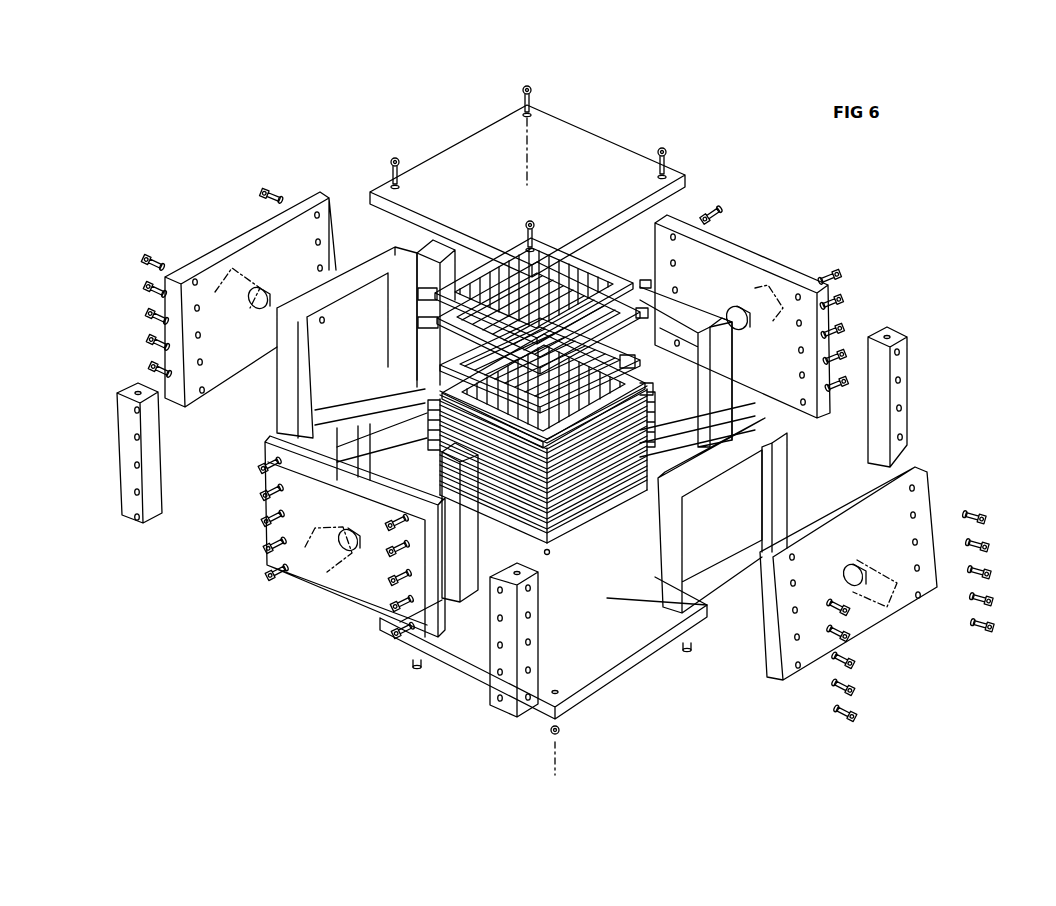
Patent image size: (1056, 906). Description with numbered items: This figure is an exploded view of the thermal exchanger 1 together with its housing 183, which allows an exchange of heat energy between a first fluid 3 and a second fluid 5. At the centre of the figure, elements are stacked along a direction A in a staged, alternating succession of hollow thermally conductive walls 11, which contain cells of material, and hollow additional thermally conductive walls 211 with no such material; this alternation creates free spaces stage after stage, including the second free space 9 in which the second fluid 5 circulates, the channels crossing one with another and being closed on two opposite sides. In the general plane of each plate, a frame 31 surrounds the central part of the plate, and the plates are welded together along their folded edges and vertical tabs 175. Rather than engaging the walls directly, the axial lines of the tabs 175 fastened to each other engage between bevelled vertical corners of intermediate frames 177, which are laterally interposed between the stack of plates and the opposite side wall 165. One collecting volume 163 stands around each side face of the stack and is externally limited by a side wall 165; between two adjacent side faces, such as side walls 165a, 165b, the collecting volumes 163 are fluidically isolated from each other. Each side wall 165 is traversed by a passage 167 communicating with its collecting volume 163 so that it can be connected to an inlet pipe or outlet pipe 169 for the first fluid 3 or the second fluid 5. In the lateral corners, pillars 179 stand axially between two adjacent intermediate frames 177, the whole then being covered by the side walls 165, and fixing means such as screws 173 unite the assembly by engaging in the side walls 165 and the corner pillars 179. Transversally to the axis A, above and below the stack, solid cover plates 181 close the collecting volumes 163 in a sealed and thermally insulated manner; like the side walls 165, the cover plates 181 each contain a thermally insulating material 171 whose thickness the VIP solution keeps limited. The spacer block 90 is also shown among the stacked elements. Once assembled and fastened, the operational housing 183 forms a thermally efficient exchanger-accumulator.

The thermal exchanger 1 is at (609, 517).
The first fluid 3 is at (243, 286).
The second fluid 5 is at (327, 550).
The second free space 9 is at (508, 512).
The hollow thermally conductive wall 11 is at (658, 396).
The frame 31 is at (616, 362).
The spacer block 90 is at (427, 418).
The collecting volume 163 is at (521, 430).
The side wall 165 is at (184, 270).
The side wall 165a is at (916, 467).
The side wall 165b is at (783, 273).
The passage 167 is at (257, 300).
The inlet pipe or outlet pipe 169 is at (231, 270).
The thermally insulating material 171 is at (605, 155).
The screws 173 is at (398, 160).
The vertical tabs 175 is at (430, 295).
The intermediate frame 177 is at (363, 272).
The corner pillar 179 is at (441, 244).
The cover plate 181 is at (484, 132).
The housing 183 is at (369, 150).
The hollow additional thermally conductive wall 211 is at (630, 483).
The stacking direction A is at (531, 85).